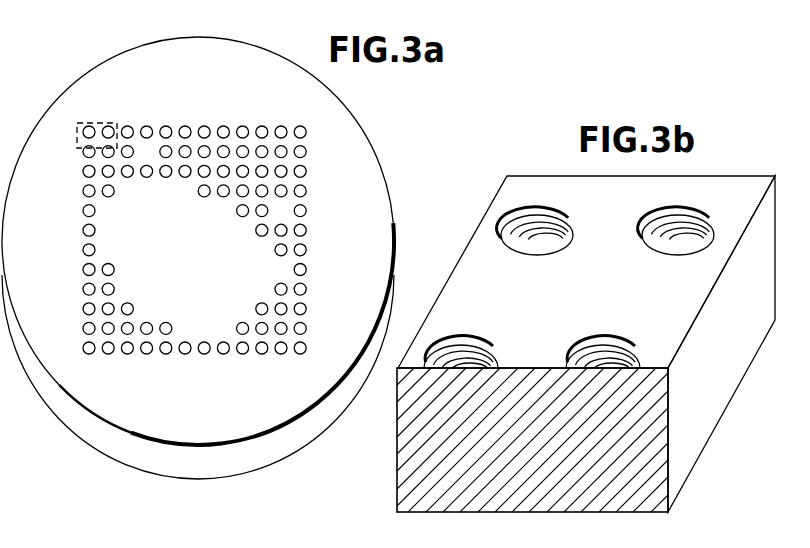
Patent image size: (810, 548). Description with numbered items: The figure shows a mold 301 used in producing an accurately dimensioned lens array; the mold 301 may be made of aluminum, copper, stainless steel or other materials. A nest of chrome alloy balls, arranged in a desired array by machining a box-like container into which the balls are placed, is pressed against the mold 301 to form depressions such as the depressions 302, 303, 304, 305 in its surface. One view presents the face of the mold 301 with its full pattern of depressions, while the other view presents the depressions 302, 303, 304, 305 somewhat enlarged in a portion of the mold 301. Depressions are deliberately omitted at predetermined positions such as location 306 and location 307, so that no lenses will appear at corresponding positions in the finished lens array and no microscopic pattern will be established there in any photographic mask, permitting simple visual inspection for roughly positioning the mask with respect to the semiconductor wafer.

In FIG. 3a, the mold 301 is at (88, 428).
In FIG. 3b, the mold 301 is at (686, 472).
In FIG. 3a, the depression 302 is at (88, 124).
In FIG. 3b, the depression 302 is at (553, 219).
In FIG. 3a, the depression 303 is at (112, 127).
In FIG. 3b, the depression 303 is at (695, 218).
In FIG. 3a, the depression 304 is at (83, 154).
In FIG. 3b, the depression 304 is at (482, 349).
In FIG. 3a, the depression 305 is at (104, 157).
In FIG. 3b, the depression 305 is at (610, 346).
In FIG. 3a, the location 306 is at (147, 155).
In FIG. 3a, the location 307 is at (290, 209).